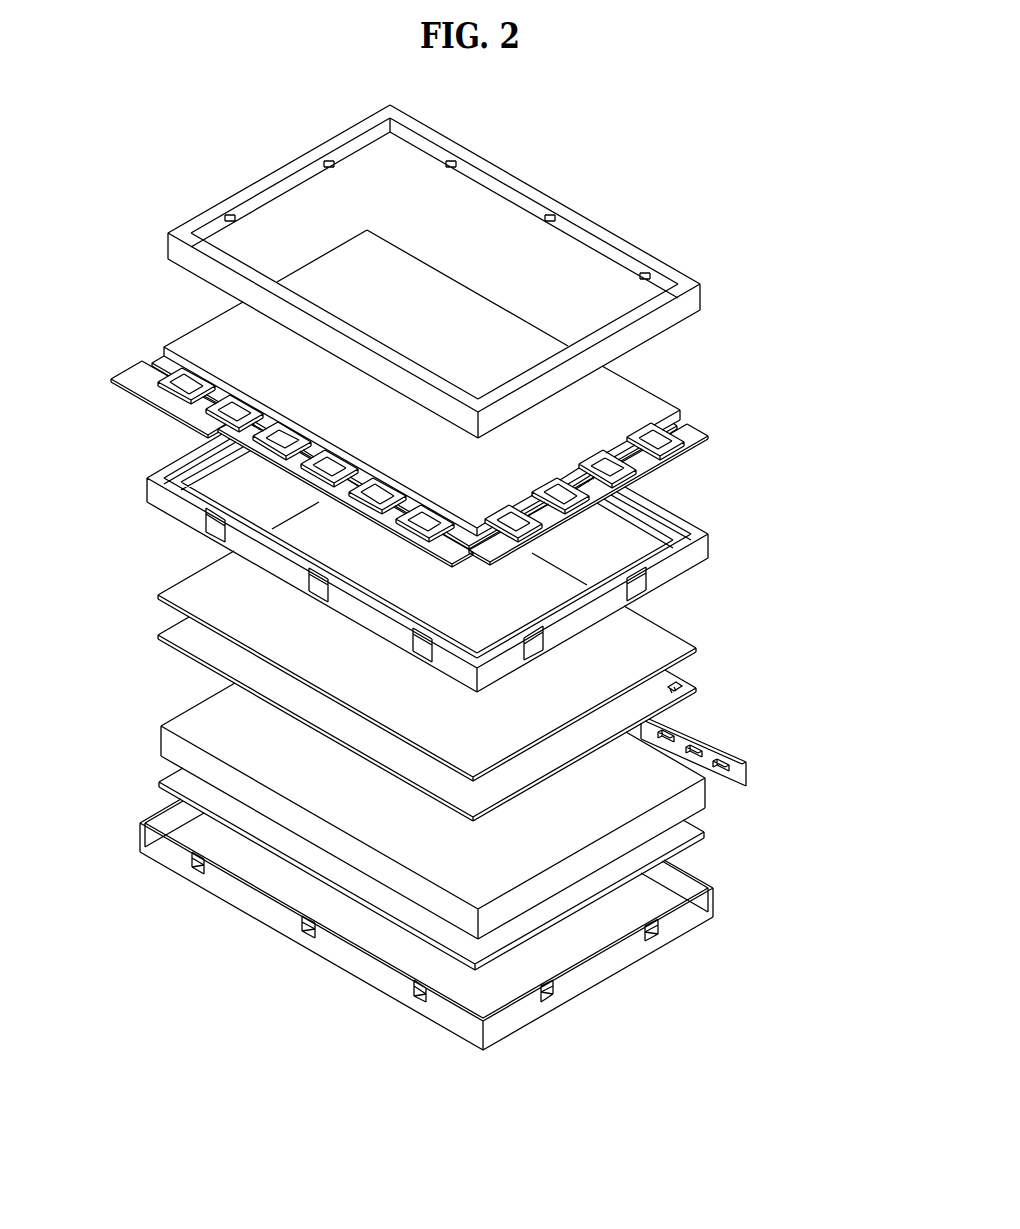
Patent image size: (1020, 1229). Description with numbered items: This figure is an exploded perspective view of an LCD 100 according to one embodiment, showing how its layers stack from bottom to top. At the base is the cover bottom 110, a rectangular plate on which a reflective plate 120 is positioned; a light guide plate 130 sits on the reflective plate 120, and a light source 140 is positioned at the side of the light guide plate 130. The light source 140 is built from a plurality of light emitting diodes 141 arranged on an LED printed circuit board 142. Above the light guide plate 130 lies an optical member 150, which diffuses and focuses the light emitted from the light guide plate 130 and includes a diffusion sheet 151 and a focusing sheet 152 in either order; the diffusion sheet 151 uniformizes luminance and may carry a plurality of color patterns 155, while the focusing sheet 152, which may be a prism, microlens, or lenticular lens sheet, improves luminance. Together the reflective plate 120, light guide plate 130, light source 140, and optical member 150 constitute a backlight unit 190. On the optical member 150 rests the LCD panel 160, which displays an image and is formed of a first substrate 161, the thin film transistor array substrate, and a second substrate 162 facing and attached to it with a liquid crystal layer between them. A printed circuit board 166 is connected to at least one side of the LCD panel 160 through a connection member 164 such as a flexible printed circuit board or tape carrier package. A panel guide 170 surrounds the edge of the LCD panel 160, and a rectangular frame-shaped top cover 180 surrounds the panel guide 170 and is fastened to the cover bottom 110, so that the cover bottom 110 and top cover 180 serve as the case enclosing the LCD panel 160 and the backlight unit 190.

The LCD 100 is at (658, 135).
The cover bottom 110 is at (708, 897).
The reflective plate 120 is at (705, 832).
The light guide plate 130 is at (700, 800).
The light source 140 is at (753, 751).
The light emitting diodes 141 is at (745, 752).
The LED printed circuit board 142 is at (748, 770).
The optical member 150 is at (494, 661).
The diffusion sheet 151 is at (700, 693).
The focusing sheet 152 is at (700, 648).
The color patterns 155 is at (686, 686).
The LCD panel 160 is at (363, 398).
The first substrate 161 is at (167, 355).
The second substrate 162 is at (195, 320).
The connection member 164 is at (157, 366).
The printed circuit board 166 is at (150, 387).
The panel guide 170 is at (708, 544).
The top cover 180 is at (695, 283).
The backlight unit 190 is at (539, 736).